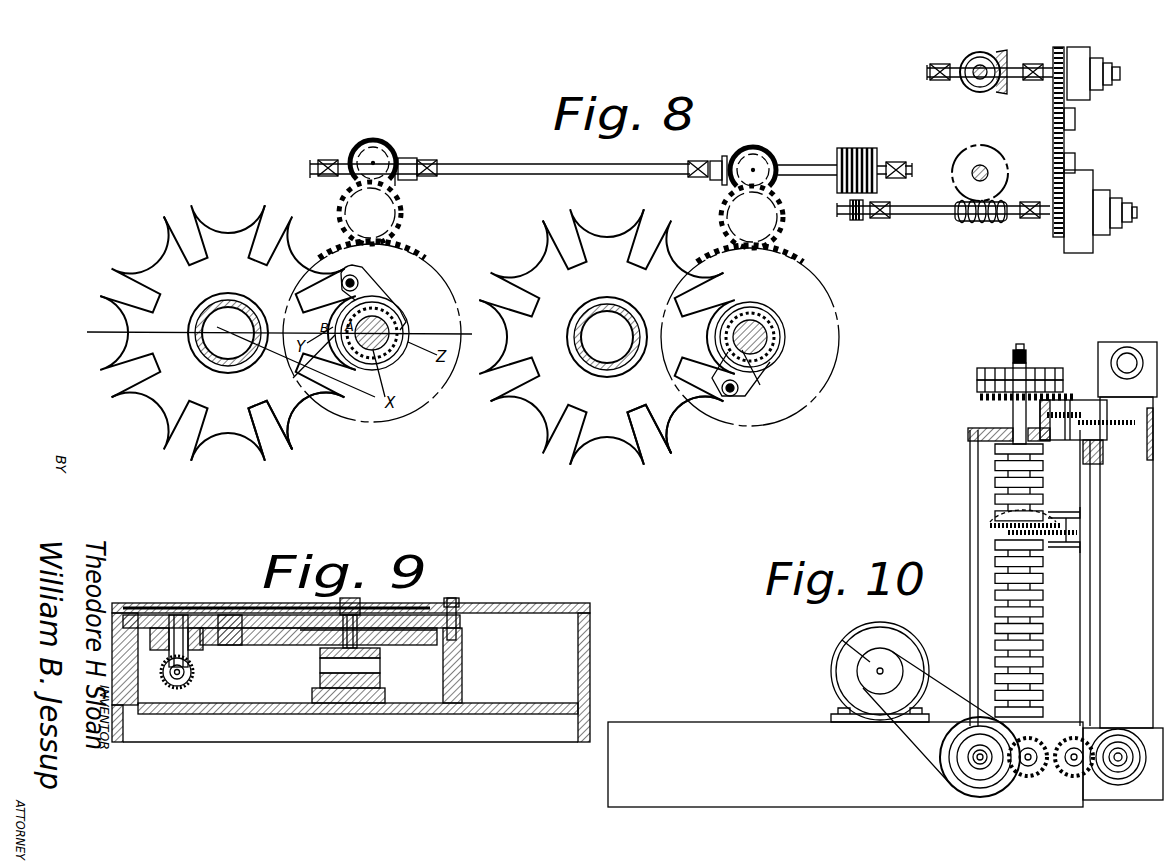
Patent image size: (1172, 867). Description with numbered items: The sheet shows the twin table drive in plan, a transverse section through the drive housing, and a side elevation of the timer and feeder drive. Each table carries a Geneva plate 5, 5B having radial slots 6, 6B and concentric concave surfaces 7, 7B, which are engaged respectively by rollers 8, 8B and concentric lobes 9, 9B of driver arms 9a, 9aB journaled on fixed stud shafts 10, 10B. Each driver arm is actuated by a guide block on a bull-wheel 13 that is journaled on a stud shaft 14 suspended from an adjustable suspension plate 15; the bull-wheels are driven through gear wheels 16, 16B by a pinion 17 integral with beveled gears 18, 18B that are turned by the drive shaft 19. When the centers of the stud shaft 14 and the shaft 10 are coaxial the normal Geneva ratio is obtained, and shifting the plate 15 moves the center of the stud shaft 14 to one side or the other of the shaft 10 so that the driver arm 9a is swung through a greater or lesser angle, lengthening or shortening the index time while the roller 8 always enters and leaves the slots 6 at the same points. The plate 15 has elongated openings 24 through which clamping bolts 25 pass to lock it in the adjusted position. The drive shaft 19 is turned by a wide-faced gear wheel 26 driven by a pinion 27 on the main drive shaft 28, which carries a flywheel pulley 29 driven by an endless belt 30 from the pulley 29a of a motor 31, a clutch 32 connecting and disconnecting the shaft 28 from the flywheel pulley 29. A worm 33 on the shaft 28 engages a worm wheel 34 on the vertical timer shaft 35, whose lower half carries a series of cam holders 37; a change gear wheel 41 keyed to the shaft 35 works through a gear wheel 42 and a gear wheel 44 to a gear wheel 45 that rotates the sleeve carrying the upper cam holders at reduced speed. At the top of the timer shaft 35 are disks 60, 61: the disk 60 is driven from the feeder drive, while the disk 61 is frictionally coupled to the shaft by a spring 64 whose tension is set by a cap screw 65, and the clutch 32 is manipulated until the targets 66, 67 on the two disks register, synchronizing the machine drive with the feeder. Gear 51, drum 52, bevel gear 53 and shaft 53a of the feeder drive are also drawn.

In FIG. 8, the Geneva plate 5 is at (238, 399).
In FIG. 8, the radial slots 6 is at (267, 453).
In FIG. 8, the concentric concave surfaces 7 is at (305, 407).
In FIG. 8, the roller 8 is at (356, 280).
In FIG. 8, the concentric lobe 9 is at (400, 362).
In FIG. 8, the driver arm 9a is at (378, 297).
In FIG. 9, the driver arm 9a is at (380, 658).
In FIG. 8, the stud shaft 10 is at (397, 320).
In FIG. 8, the bull-wheel 13 is at (423, 260).
In FIG. 9, the bull-wheel 13 is at (283, 646).
In FIG. 8, the gear wheel 16 is at (402, 212).
In FIG. 9, the gear wheel 16 is at (250, 648).
In FIG. 8, the pinion 17 is at (380, 153).
In FIG. 9, the pinion 17 is at (160, 612).
In FIG. 8, the beveled gear 18 is at (373, 149).
In FIG. 9, the beveled gear 18 is at (198, 660).
In FIG. 8, the drive shaft 19 is at (574, 162).
In FIG. 9, the drive shaft 19 is at (170, 680).
In FIG. 8, the Geneva plate 5B is at (630, 406).
In FIG. 8, the radial slots 6B is at (643, 453).
In FIG. 8, the concentric concave surfaces 7B is at (682, 420).
In FIG. 8, the roller 8B is at (738, 388).
In FIG. 8, the concentric lobe 9B is at (760, 312).
In FIG. 8, the driver arm 9aB is at (765, 365).
In FIG. 8, the stud shaft 10B is at (773, 337).
In FIG. 8, the gear wheel 16B is at (785, 219).
In FIG. 8, the beveled gear 18B is at (762, 152).
In FIG. 8, the gear wheel 26 is at (862, 148).
In FIG. 8, the pinion 27 is at (858, 222).
In FIG. 8, the main drive shaft 28 is at (920, 216).
In FIG. 8, the flywheel pulley 29 is at (1075, 255).
In FIG. 10, the flywheel pulley 29 is at (1000, 784).
In FIG. 8, the clutch 32 is at (1112, 232).
In FIG. 8, the worm 33 is at (983, 225).
In FIG. 8, the worm wheel 34 is at (1009, 181).
In FIG. 8, the timer shaft 35 is at (986, 167).
In FIG. 8, the gear 51 is at (1057, 72).
In FIG. 8, the drum 52 is at (1090, 96).
In FIG. 8, the bevel gear 53 is at (998, 62).
In FIG. 8, the shaft 53a is at (965, 63).
In FIG. 9, the stud shaft 14 is at (340, 610).
In FIG. 9, the suspension plate 15 is at (412, 612).
In FIG. 9, the elongated openings 24 is at (470, 612).
In FIG. 9, the clamping bolts 25 is at (456, 600).
In FIG. 10, the pulley 29a is at (842, 640).
In FIG. 10, the endless belt 30 is at (915, 742).
In FIG. 10, the motor 31 is at (835, 665).
In FIG. 10, the cam holders 37 is at (1045, 690).
In FIG. 10, the change gear wheel 41 is at (1000, 532).
In FIG. 10, the gear wheel 42 is at (1066, 548).
In FIG. 10, the gear wheel 44 is at (1057, 512).
In FIG. 10, the gear wheel 45 is at (995, 514).
In FIG. 10, the disk 60 is at (977, 386).
In FIG. 10, the disk 61 is at (977, 372).
In FIG. 10, the spring 64 is at (1030, 357).
In FIG. 10, the cap screw 65 is at (1022, 346).
In FIG. 10, the target 66 is at (1000, 399).
In FIG. 10, the target 67 is at (1010, 368).